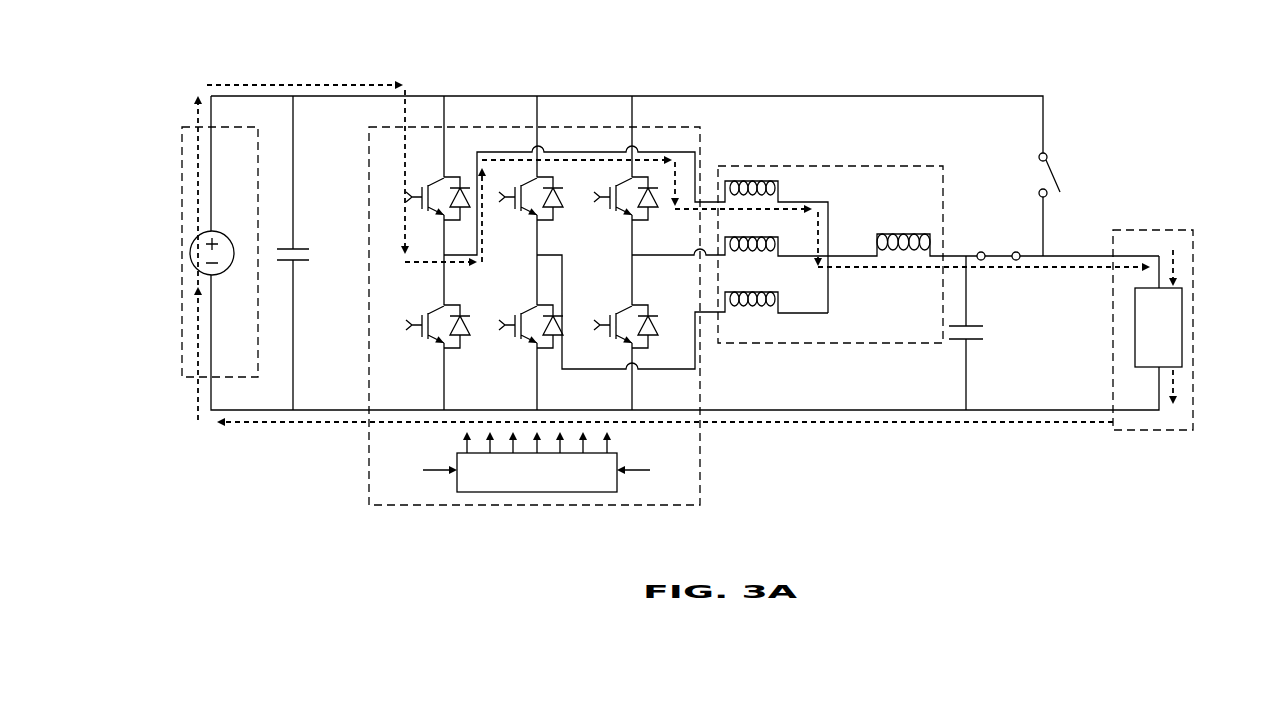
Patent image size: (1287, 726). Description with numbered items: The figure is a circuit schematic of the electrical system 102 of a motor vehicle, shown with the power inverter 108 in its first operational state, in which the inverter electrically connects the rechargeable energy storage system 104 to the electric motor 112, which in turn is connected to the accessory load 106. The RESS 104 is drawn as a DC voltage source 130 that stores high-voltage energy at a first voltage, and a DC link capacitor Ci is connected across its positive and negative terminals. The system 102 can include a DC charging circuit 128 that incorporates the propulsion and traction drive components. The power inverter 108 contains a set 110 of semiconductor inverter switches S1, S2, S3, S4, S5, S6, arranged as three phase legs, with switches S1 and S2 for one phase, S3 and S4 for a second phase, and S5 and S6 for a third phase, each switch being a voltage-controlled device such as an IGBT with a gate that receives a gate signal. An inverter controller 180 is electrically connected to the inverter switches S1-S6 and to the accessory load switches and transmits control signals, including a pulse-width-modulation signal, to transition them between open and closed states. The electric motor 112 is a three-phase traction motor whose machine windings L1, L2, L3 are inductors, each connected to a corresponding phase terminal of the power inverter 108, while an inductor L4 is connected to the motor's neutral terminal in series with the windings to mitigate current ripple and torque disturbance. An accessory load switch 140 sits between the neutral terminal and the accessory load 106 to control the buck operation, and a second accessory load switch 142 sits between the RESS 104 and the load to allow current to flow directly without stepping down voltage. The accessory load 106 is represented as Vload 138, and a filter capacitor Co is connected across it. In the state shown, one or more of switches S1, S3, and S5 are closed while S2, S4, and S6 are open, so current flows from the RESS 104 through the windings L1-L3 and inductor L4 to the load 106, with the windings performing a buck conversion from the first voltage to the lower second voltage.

The electrical system 102 is at (685, 234).
The DC charging circuit 128 is at (318, 70).
The rechargeable energy storage system 104 is at (180, 197).
The DC voltage source 130 is at (193, 242).
The DC link capacitor Ci is at (302, 247).
The power inverter 108 is at (703, 150).
The set of switches 110 is at (653, 72).
The inverter switch S1 is at (418, 218).
The inverter switch S2 is at (422, 341).
The inverter switch S3 is at (512, 218).
The inverter switch S4 is at (520, 340).
The inverter switch S5 is at (608, 218).
The inverter switch S6 is at (612, 342).
The inverter controller 180 is at (556, 484).
The electric motor 112 is at (927, 165).
The machine winding L1 is at (780, 183).
The machine winding L2 is at (780, 238).
The machine winding L3 is at (780, 293).
The inductor L4 is at (928, 232).
The accessory load switch 140 is at (980, 250).
The accessory load switch 142 is at (1048, 157).
The filter capacitor Co is at (973, 325).
The accessory load 106 is at (1150, 229).
The Vload 138 is at (1178, 340).